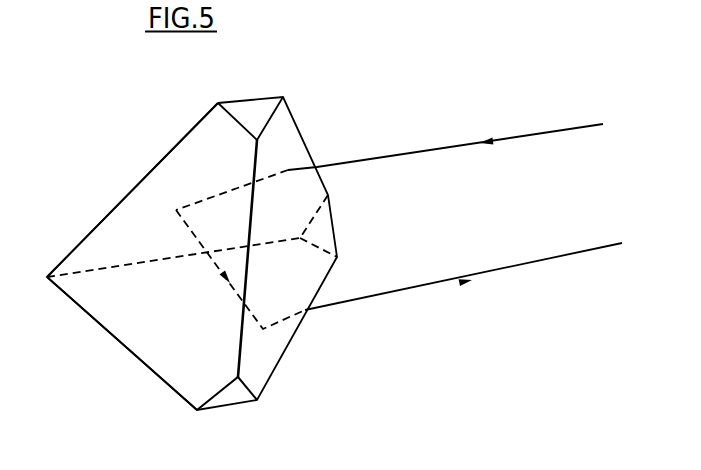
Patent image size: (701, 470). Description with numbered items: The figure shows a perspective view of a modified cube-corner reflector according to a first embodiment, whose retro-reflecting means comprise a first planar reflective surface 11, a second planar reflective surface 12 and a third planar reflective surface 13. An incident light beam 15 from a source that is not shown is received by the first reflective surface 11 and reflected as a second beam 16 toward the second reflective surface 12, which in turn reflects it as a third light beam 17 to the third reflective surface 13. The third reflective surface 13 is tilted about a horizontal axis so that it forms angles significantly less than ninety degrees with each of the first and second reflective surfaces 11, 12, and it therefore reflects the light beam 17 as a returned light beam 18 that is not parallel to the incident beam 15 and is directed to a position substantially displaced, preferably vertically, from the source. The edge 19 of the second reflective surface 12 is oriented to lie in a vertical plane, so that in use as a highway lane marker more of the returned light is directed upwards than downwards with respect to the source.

The first planar reflective surface 11 is at (286, 133).
The second planar reflective surface 12 is at (114, 226).
The third planar reflective surface 13 is at (262, 364).
The incident light beam 15 is at (438, 148).
The second beam 16 is at (218, 195).
The third light beam 17 is at (233, 289).
The returned light beam 18 is at (502, 273).
The edge 19 is at (123, 199).